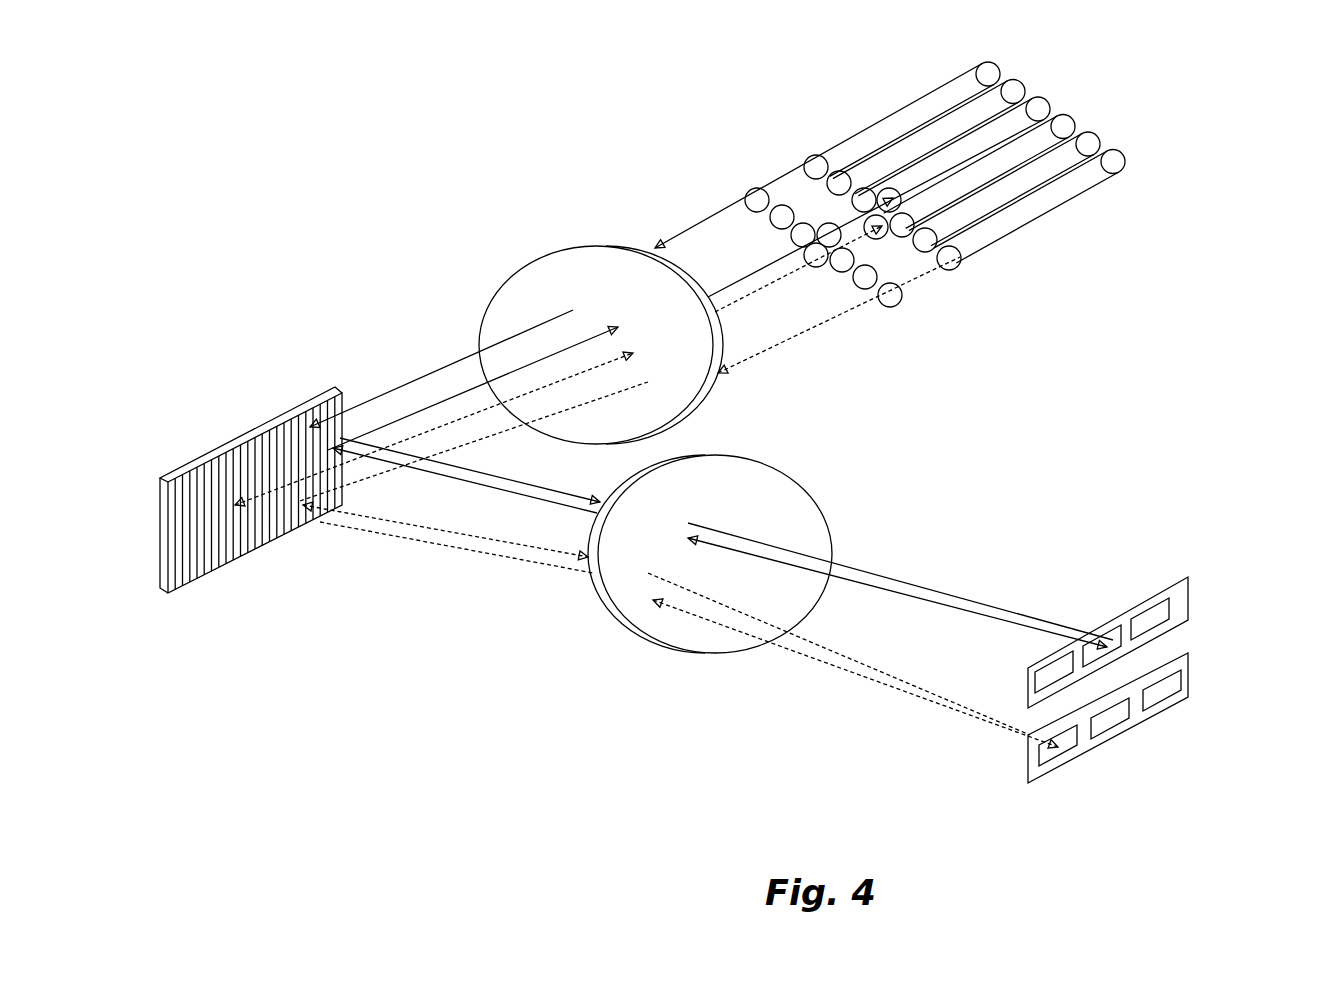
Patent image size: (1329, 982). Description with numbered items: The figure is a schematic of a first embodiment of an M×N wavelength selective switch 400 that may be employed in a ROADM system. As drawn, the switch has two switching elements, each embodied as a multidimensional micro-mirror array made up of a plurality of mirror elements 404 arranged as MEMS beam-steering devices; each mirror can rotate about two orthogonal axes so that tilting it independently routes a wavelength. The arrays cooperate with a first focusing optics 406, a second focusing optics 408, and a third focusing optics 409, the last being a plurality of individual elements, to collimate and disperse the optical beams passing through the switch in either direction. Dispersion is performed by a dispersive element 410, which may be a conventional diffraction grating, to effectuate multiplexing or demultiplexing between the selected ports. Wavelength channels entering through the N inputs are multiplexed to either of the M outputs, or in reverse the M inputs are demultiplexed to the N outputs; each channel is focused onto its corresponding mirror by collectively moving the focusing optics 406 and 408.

The M×N WSS 400 is at (1258, 145).
The mirror elements 404 is at (1148, 622).
The first focusing optics 406 is at (655, 405).
The second focusing optics 408 is at (788, 487).
The third focusing optics 409 is at (899, 303).
The dispersive element 410 is at (190, 592).